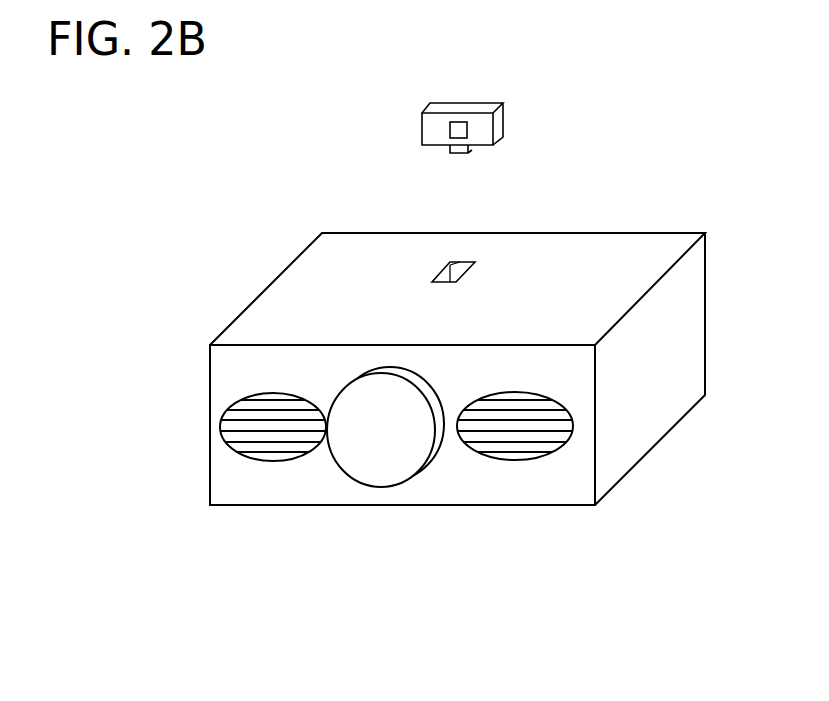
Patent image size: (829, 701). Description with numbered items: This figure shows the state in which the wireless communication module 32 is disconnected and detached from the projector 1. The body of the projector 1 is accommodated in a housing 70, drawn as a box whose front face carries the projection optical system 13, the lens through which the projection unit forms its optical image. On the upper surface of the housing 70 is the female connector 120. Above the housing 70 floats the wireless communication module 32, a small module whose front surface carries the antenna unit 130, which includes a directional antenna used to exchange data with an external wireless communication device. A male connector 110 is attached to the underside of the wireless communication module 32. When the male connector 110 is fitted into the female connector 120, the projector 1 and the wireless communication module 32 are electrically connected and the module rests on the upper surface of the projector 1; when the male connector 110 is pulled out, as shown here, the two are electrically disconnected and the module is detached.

The housing 70 is at (580, 252).
The projector 1 is at (638, 408).
The projection optical system 13 is at (357, 467).
The female connector 120 is at (450, 265).
The wireless communication module 32 is at (473, 108).
The antenna unit 130 is at (453, 127).
The male connector 110 is at (467, 150).